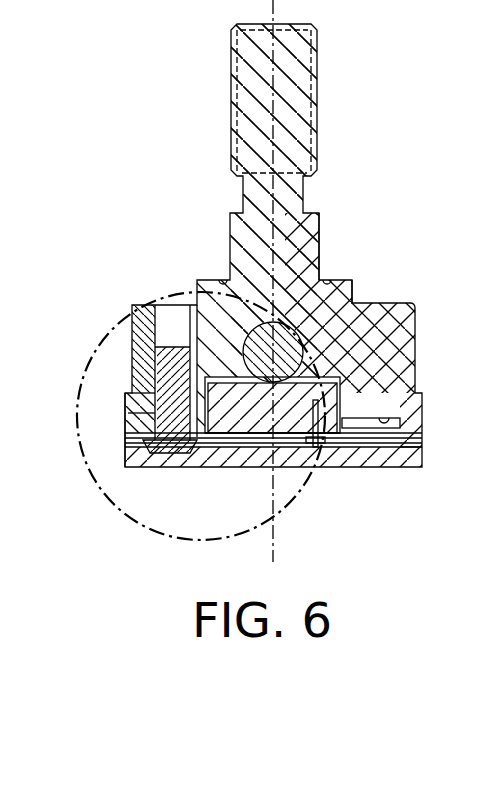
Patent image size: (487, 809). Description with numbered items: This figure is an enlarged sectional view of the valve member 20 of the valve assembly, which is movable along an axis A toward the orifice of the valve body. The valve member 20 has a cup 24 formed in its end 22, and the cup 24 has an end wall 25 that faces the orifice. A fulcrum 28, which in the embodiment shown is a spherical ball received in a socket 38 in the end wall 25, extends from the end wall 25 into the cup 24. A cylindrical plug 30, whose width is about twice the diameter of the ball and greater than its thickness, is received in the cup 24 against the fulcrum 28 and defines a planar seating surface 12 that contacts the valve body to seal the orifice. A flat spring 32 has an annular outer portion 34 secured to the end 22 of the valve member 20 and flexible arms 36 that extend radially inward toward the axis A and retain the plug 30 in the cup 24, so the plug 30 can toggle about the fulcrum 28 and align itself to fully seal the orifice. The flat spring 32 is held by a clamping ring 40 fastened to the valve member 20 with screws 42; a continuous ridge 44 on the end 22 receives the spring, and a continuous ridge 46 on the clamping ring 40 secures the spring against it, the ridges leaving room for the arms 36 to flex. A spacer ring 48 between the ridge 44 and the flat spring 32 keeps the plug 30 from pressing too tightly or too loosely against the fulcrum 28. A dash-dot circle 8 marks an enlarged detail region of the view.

The axis A is at (290, 127).
The detail region 8 is at (86, 510).
The seating surface 12 is at (268, 440).
The valve member 20 is at (220, 241).
The end 22 is at (400, 392).
The cup 24 is at (346, 359).
The end wall 25 is at (352, 300).
The fulcrum 28 is at (322, 300).
The plug 30 is at (345, 385).
The flat spring 32 is at (128, 436).
The outer portion 34 is at (422, 440).
The flexible arms 36 is at (322, 441).
The socket 38 is at (276, 324).
The clamping ring 40 is at (125, 460).
The screws 42 is at (175, 462).
The continuous ridge 44 is at (420, 432).
The continuous ridge 46 is at (413, 455).
The spacer ring 48 is at (128, 433).